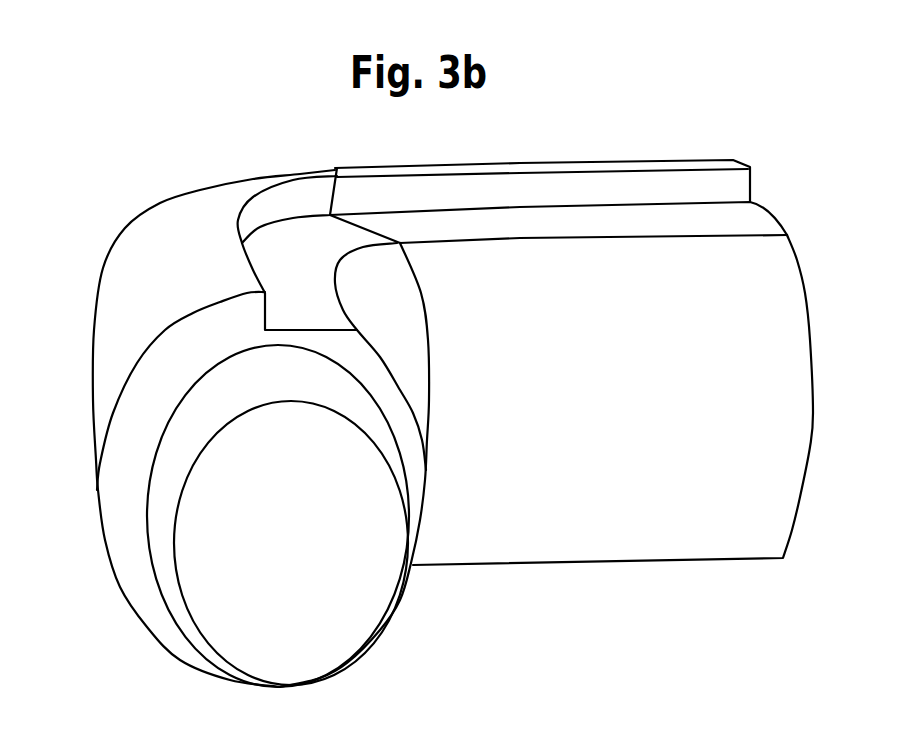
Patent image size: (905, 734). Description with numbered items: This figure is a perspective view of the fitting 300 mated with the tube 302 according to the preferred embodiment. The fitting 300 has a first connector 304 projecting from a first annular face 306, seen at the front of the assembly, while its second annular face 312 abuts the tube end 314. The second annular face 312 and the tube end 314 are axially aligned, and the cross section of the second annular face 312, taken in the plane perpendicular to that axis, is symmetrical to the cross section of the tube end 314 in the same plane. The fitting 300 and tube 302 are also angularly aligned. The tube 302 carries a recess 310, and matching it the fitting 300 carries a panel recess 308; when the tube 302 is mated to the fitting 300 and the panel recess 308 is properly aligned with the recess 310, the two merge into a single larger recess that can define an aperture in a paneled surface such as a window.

The fitting 300 is at (135, 210).
The tube 302 is at (585, 152).
The first connector 304 is at (358, 605).
The first annular face 306 is at (393, 427).
The panel recess 308 is at (305, 265).
The recess 310 is at (512, 223).
The second annular face 312 is at (330, 174).
The tube end 314 is at (337, 168).